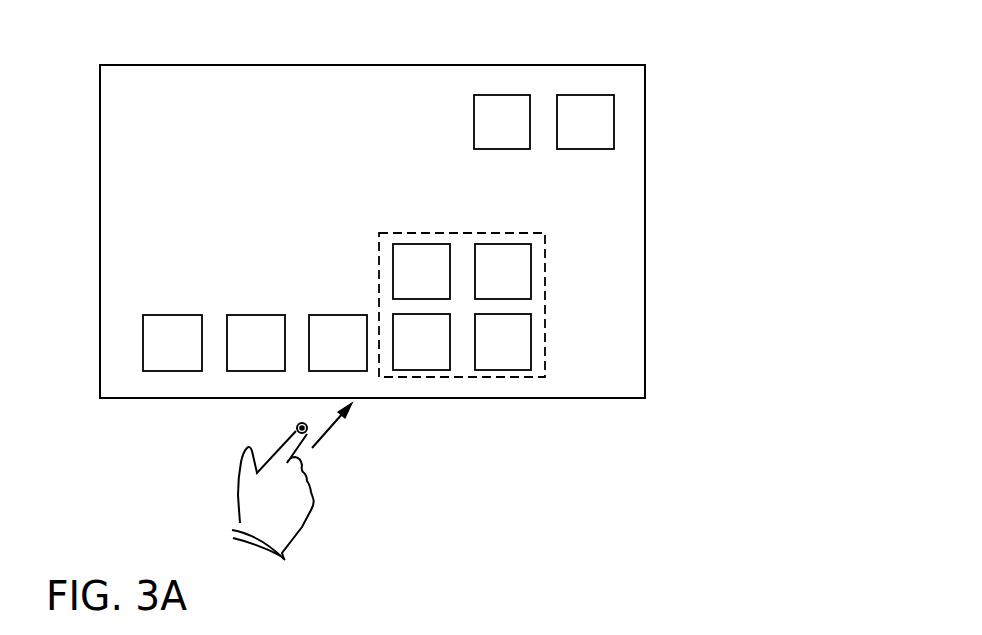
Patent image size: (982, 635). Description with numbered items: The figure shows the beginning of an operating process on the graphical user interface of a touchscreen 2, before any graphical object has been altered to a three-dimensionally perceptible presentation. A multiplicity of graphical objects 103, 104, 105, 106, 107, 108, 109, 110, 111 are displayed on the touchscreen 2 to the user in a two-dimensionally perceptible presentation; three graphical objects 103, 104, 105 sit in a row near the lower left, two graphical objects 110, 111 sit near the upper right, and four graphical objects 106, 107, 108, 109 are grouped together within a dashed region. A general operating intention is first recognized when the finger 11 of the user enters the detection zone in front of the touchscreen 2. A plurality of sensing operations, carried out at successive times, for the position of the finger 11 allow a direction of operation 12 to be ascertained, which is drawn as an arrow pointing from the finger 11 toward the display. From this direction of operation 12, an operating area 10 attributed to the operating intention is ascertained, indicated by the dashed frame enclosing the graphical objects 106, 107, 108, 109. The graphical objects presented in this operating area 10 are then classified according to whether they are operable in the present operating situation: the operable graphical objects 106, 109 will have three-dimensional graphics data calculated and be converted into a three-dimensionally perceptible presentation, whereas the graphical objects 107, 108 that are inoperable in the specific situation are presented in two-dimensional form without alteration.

The touchscreen 2 is at (668, 53).
The operating area 10 is at (545, 294).
The finger 11 is at (297, 427).
The direction of operation 12 is at (328, 435).
The graphical object 103 is at (172, 343).
The graphical object 104 is at (256, 343).
The graphical object 105 is at (338, 343).
The operable graphical object 106 is at (421, 342).
The inoperable graphical object 107 is at (503, 342).
The inoperable graphical object 108 is at (421, 271).
The operable graphical object 109 is at (503, 271).
The graphical object 110 is at (502, 122).
The graphical object 111 is at (585, 122).